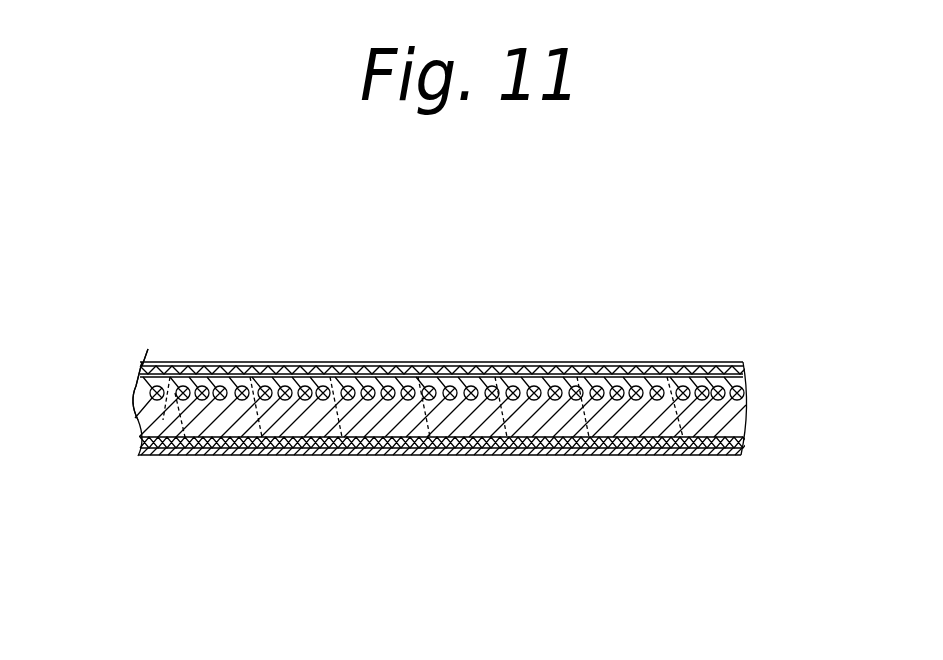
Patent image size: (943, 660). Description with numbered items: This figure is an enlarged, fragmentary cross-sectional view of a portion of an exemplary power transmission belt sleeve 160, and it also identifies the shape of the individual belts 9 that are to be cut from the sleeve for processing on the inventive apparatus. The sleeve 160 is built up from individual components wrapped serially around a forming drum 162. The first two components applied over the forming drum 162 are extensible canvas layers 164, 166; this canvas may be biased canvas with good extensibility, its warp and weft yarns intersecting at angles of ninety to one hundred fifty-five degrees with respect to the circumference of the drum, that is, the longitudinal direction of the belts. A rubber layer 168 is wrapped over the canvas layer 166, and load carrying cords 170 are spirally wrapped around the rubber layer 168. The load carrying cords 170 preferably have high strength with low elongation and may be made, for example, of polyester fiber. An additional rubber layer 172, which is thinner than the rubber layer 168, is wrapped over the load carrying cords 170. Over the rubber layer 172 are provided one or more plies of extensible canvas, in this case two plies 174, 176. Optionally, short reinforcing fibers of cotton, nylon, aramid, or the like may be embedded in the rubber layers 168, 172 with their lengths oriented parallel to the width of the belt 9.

The belt 9 is at (690, 588).
The belt sleeve 160 is at (758, 390).
The forming drum 162 is at (518, 516).
The extensible canvas layer 164 is at (742, 452).
The extensible canvas layer 166 is at (742, 437).
The rubber layer 168 is at (743, 415).
The load carrying cords 170 is at (744, 378).
The additional rubber layer 172 is at (140, 377).
The ply of extensible canvas 174 is at (743, 371).
The ply of extensible canvas 176 is at (743, 363).